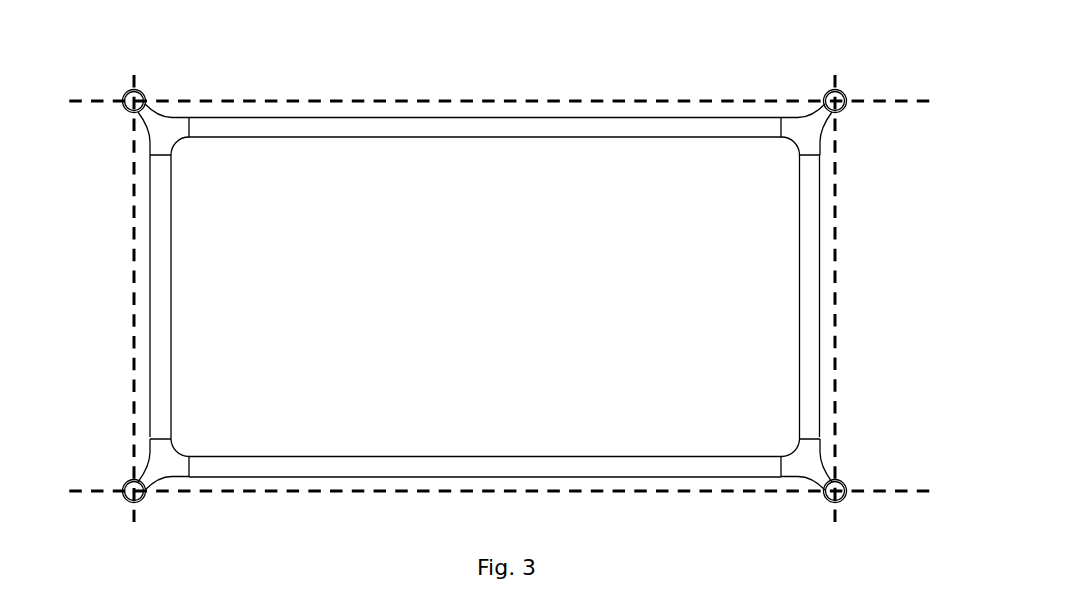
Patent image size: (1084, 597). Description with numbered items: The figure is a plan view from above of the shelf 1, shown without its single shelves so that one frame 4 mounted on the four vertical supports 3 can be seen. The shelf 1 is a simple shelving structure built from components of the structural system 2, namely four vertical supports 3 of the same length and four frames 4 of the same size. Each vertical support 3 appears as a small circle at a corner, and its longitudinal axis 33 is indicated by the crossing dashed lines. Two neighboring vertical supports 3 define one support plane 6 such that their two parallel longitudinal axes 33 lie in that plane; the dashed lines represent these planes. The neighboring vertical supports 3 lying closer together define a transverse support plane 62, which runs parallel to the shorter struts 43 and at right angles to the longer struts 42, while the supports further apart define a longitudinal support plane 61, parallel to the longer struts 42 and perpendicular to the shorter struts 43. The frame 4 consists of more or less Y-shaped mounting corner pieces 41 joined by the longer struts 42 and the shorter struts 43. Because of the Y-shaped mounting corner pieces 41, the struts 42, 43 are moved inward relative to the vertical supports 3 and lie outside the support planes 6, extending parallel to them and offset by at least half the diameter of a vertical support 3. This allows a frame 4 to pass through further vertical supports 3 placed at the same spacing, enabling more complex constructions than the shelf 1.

The shelf 1 is at (102, 155).
The structural system 2 is at (114, 402).
The vertical support 3 is at (866, 497).
The longitudinal axis 33 is at (837, 97).
The frame 4 is at (848, 328).
The mounting corner piece 41 is at (800, 127).
The longer strut 42 is at (639, 127).
The shorter strut 43 is at (153, 268).
The support plane 6 is at (418, 84).
The longitudinal support plane 61 is at (292, 100).
The transverse support plane 62 is at (836, 213).